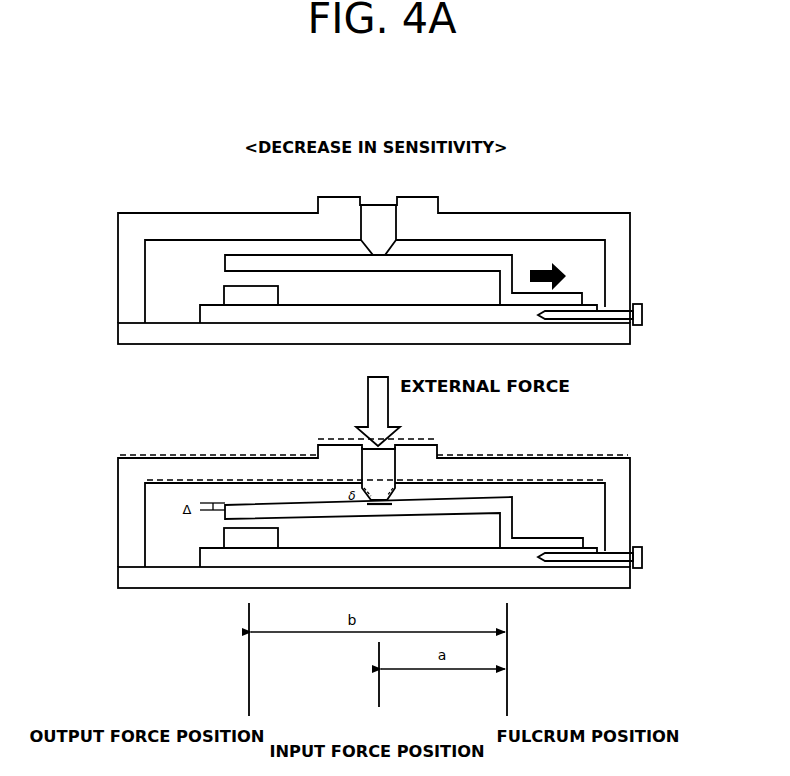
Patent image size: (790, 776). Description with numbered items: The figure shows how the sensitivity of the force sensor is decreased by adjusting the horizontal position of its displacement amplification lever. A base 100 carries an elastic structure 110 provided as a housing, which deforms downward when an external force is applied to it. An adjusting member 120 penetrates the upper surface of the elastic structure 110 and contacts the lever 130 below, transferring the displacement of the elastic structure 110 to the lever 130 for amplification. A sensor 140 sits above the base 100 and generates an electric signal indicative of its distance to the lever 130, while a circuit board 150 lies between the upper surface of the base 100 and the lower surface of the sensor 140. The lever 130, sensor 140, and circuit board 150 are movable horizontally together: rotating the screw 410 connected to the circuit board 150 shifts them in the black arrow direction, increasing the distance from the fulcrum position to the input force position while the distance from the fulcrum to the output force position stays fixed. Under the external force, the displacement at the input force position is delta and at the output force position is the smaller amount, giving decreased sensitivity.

The base 100 is at (617, 337).
The elastic structure 110 is at (532, 230).
The adjusting member 120 is at (382, 218).
The lever 130 is at (442, 262).
The sensor 140 is at (233, 294).
The circuit board 150 is at (210, 317).
The screw 410 is at (617, 316).